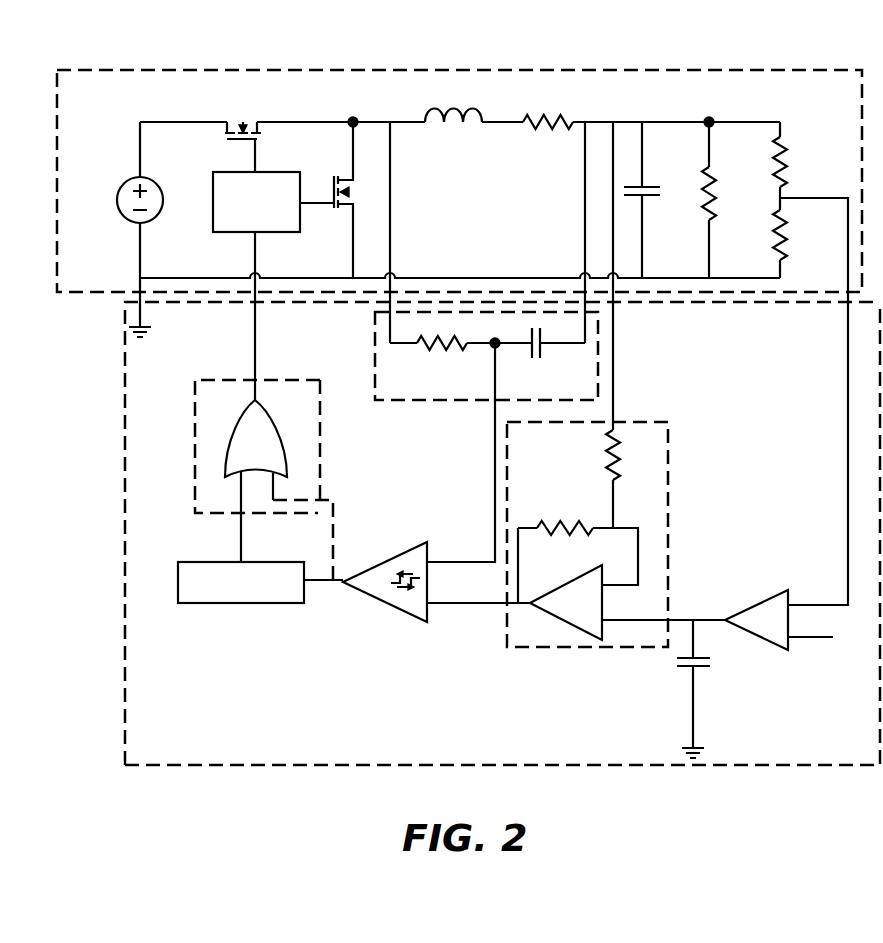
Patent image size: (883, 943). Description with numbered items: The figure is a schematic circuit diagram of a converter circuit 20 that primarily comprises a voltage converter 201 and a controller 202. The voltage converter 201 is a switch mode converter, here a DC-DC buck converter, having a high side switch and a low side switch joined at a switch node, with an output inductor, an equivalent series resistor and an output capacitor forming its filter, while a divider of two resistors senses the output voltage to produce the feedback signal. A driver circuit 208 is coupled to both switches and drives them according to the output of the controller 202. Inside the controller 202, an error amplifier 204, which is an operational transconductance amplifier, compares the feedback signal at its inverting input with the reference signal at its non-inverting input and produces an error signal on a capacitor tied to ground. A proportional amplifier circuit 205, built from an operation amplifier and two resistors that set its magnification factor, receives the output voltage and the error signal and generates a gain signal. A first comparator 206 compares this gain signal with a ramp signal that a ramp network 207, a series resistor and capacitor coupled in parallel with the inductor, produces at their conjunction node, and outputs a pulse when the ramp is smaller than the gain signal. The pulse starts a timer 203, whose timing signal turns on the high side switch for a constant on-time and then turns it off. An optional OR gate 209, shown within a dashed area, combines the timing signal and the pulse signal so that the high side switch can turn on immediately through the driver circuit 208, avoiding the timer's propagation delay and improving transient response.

The converter circuit 20 is at (480, 34).
The voltage converter 201 is at (247, 60).
The controller 202 is at (125, 405).
The timer 203 is at (262, 604).
The error amplifier 204 is at (770, 646).
The proportional amplifier circuit 205 is at (668, 503).
The first comparator 206 is at (386, 553).
The ramp network 207 is at (440, 402).
The driver circuit 208 is at (213, 200).
The OR gate 209 is at (322, 456).